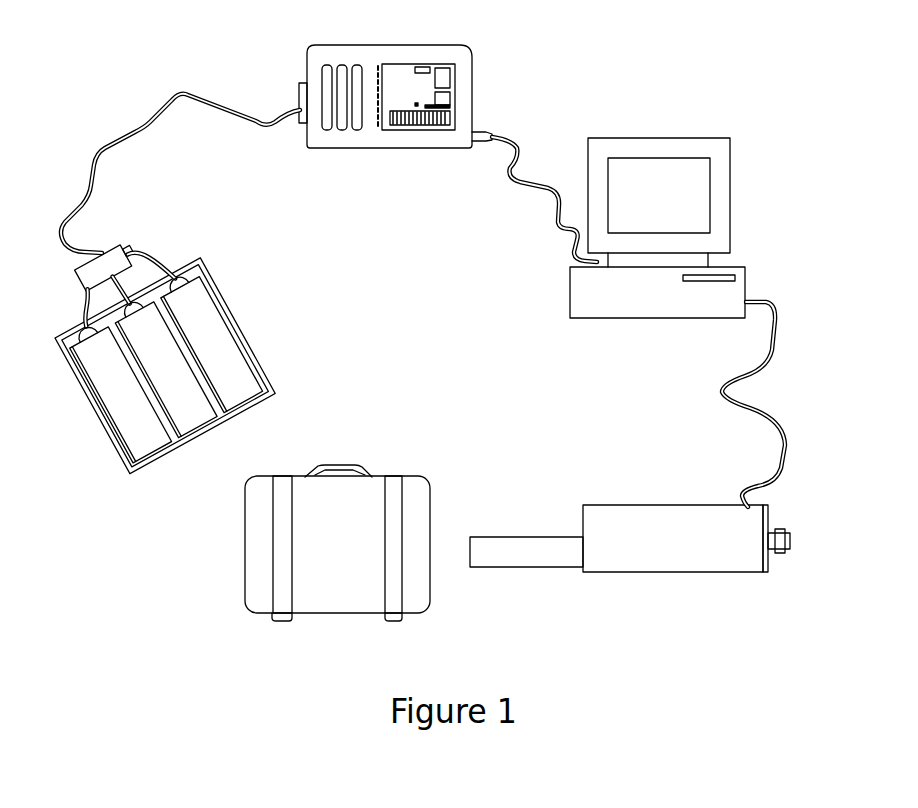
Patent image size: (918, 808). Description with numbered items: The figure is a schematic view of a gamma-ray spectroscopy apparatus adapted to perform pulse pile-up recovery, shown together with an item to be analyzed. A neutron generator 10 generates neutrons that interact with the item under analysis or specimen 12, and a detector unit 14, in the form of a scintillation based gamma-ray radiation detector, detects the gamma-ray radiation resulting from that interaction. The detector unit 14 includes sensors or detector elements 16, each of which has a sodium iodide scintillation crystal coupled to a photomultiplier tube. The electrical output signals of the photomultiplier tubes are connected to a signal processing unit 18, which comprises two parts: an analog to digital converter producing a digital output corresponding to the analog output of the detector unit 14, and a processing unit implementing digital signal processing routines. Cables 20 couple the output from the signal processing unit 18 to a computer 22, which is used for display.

The neutron generator 10 is at (682, 573).
The specimen 12 is at (243, 585).
The detector unit 14 is at (262, 347).
The detector elements 16 is at (217, 323).
The signal processing unit 18 is at (433, 45).
The cables 20 is at (155, 127).
The computer 22 is at (681, 137).